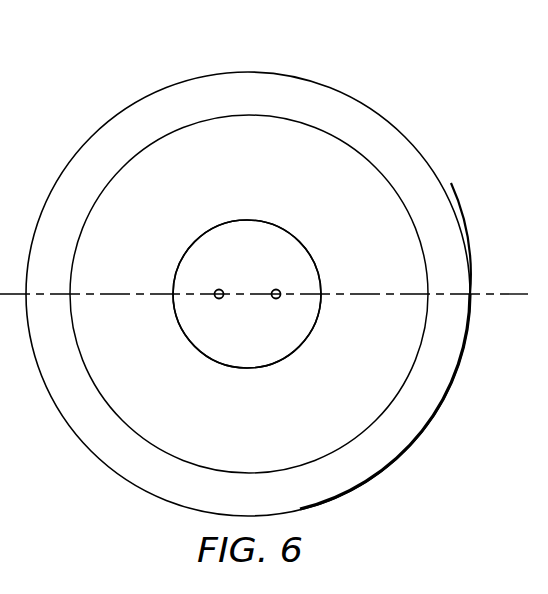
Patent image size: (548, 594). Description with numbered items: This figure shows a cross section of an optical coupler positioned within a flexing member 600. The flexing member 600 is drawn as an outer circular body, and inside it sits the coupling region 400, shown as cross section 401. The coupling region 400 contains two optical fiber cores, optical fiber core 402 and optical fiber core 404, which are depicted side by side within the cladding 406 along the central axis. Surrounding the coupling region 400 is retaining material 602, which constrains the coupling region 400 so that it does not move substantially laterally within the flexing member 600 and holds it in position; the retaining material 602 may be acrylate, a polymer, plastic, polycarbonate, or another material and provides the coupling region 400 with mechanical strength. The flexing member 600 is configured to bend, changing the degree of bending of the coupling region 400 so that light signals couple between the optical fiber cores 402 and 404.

The flexing member 600 is at (166, 70).
The retaining material 602 is at (378, 395).
The coupling region 400 is at (244, 279).
The cross section 401 is at (271, 224).
The optical fiber core 402 is at (222, 290).
The optical fiber core 404 is at (274, 299).
The cladding 406 is at (210, 344).